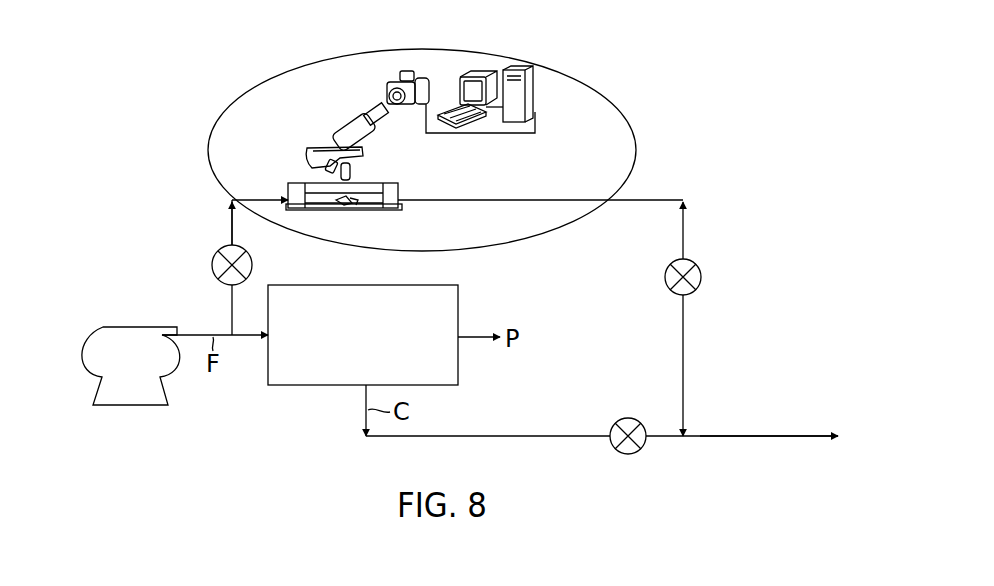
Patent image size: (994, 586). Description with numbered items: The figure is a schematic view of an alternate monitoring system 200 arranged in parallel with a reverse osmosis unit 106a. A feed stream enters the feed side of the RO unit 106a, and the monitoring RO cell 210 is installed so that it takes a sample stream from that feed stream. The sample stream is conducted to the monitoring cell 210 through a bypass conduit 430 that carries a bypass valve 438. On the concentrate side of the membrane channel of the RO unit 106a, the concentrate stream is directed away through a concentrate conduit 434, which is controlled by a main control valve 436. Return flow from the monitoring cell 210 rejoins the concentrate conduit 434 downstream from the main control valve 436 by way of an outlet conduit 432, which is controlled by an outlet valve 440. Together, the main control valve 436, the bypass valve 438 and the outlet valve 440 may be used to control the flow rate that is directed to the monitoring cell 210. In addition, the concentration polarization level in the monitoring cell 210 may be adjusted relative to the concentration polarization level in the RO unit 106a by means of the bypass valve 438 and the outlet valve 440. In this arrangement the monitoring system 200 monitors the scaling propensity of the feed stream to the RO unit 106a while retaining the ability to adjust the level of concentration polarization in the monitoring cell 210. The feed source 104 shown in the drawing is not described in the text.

The monitoring system 200 is at (495, 55).
The monitoring RO cell 210 is at (380, 183).
The feed water source 104 is at (168, 390).
The RO unit 106a is at (450, 377).
The bypass conduit 430 is at (231, 305).
The outlet conduit 432 is at (685, 222).
The concentrate conduit 434 is at (500, 436).
The main control valve 436 is at (643, 448).
The bypass valve 438 is at (215, 256).
The outlet valve 440 is at (698, 268).